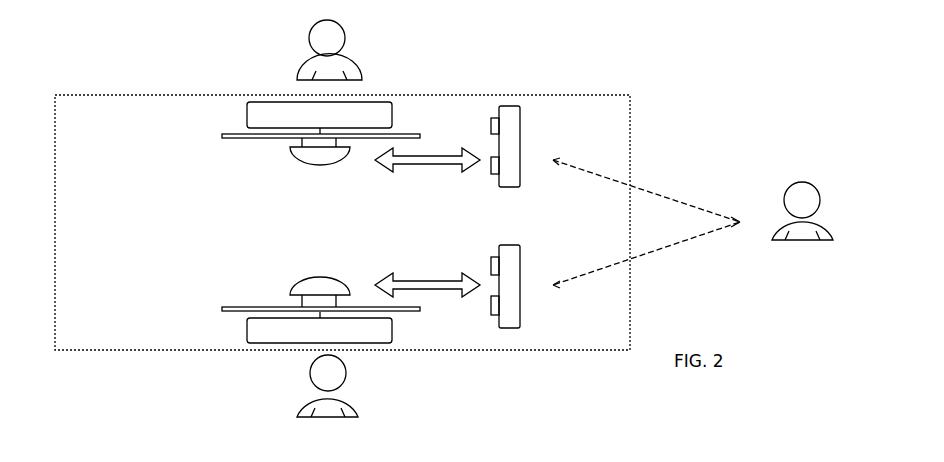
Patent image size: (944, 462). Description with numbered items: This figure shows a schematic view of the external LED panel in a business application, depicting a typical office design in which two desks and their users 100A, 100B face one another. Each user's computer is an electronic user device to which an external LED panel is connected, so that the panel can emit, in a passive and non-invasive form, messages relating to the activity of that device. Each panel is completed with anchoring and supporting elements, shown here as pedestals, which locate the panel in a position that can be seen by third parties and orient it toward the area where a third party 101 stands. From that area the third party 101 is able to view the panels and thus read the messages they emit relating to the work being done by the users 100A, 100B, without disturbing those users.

The user 100A is at (346, 50).
The user 100B is at (306, 386).
The third party 101 is at (712, 223).